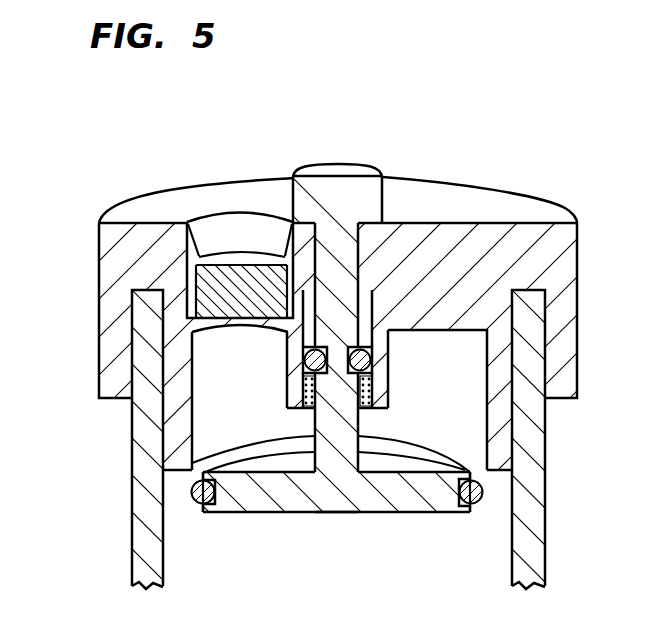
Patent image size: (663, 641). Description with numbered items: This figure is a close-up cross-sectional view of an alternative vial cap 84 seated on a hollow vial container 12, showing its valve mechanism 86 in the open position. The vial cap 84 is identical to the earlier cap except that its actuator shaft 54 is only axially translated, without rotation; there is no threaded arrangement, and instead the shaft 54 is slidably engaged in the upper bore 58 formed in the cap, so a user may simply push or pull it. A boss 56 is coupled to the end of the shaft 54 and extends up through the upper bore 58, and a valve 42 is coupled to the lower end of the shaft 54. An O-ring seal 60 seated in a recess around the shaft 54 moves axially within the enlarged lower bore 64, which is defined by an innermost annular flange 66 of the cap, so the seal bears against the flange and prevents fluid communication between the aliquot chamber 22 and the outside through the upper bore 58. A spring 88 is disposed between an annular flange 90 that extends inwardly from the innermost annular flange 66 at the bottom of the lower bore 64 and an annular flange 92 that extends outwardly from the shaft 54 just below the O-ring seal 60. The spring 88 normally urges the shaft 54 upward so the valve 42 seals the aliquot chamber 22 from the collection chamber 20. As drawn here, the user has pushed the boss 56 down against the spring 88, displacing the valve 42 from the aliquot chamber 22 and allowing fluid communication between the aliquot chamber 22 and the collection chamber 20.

The vial container 12 is at (533, 512).
The collection chamber 20 is at (378, 535).
The aliquot chamber 22 is at (205, 390).
The valve 42 is at (255, 500).
The actuator shaft 54 is at (365, 240).
The boss 56 is at (342, 190).
The upper bore 58 is at (337, 263).
The O-ring seal 60 is at (372, 362).
The lower bore 64 is at (294, 342).
The innermost annular flange 66 is at (380, 392).
The vial cap 84 is at (596, 184).
The valve mechanism 86 is at (302, 500).
The spring 88 is at (289, 390).
The annular flange 90 is at (375, 408).
The annular flange 92 is at (374, 380).